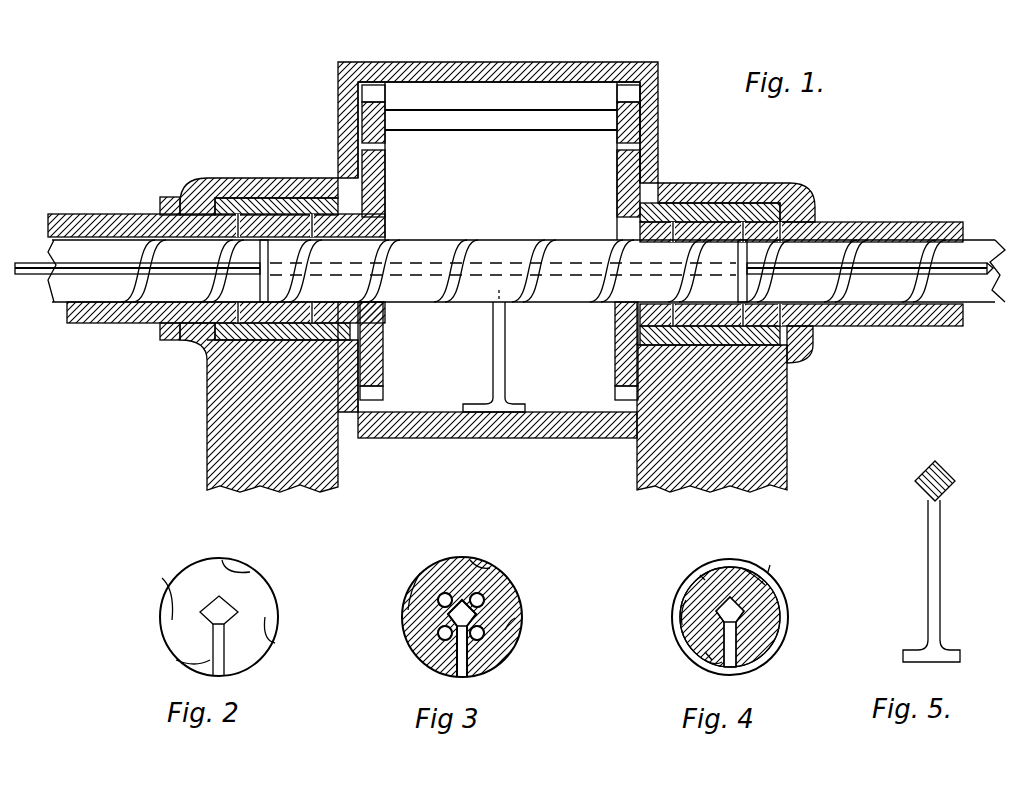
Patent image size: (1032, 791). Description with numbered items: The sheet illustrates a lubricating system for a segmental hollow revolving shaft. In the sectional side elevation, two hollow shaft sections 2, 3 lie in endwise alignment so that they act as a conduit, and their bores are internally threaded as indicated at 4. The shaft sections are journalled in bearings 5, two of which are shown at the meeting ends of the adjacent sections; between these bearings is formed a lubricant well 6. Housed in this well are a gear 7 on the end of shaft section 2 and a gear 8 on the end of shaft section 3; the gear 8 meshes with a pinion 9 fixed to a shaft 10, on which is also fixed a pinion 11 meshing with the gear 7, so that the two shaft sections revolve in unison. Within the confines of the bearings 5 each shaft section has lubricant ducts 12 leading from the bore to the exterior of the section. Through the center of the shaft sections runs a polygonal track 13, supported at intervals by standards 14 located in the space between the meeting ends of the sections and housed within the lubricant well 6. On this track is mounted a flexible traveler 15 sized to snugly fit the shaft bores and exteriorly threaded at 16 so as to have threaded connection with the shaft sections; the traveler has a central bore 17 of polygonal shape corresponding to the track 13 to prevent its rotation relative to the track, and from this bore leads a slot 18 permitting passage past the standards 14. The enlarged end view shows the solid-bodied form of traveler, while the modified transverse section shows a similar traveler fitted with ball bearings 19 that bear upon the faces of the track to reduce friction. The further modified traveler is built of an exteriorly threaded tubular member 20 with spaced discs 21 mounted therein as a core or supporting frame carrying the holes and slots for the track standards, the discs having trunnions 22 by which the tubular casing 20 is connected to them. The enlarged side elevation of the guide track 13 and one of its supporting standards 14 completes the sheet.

In FIG. 1, the hollow shaft section 2 is at (106, 214).
In FIG. 1, the hollow shaft section 3 is at (873, 222).
In FIG. 1, the internal threads 4 is at (130, 214).
In FIG. 1, the bearing 5 is at (207, 410).
In FIG. 1, the lubricant well 6 is at (418, 405).
In FIG. 1, the gear 7 is at (340, 168).
In FIG. 1, the gear 8 is at (650, 170).
In FIG. 1, the pinion 9 is at (660, 100).
In FIG. 1, the shaft 10 is at (560, 115).
In FIG. 1, the pinion 11 is at (408, 64).
In FIG. 1, the lubricant duct 12 is at (222, 196).
In FIG. 1, the polygonal track 13 is at (985, 265).
In FIG. 5, the polygonal track 13 is at (950, 474).
In FIG. 1, the standard 14 is at (505, 380).
In FIG. 5, the standard 14 is at (940, 562).
In FIG. 1, the flexible traveler 15 is at (520, 240).
In FIG. 2, the flexible traveler 15 is at (255, 586).
In FIG. 3, the flexible traveler 15 is at (480, 575).
In FIG. 4, the flexible traveler 15 is at (705, 575).
In FIG. 1, the exterior threads 16 is at (452, 243).
In FIG. 2, the exterior threads 16 is at (235, 568).
In FIG. 3, the exterior threads 16 is at (406, 600).
In FIG. 4, the exterior threads 16 is at (780, 596).
In FIG. 2, the central bore 17 is at (236, 612).
In FIG. 3, the central bore 17 is at (480, 614).
In FIG. 4, the central bore 17 is at (745, 611).
In FIG. 1, the slot 18 is at (501, 268).
In FIG. 2, the slot 18 is at (224, 650).
In FIG. 3, the slot 18 is at (470, 668).
In FIG. 4, the slot 18 is at (740, 650).
In FIG. 3, the ball bearings 19 is at (500, 598).
In FIG. 4, the tubular member 20 is at (788, 625).
In FIG. 4, the disc 21 is at (770, 580).
In FIG. 4, the trunnion 22 is at (748, 565).